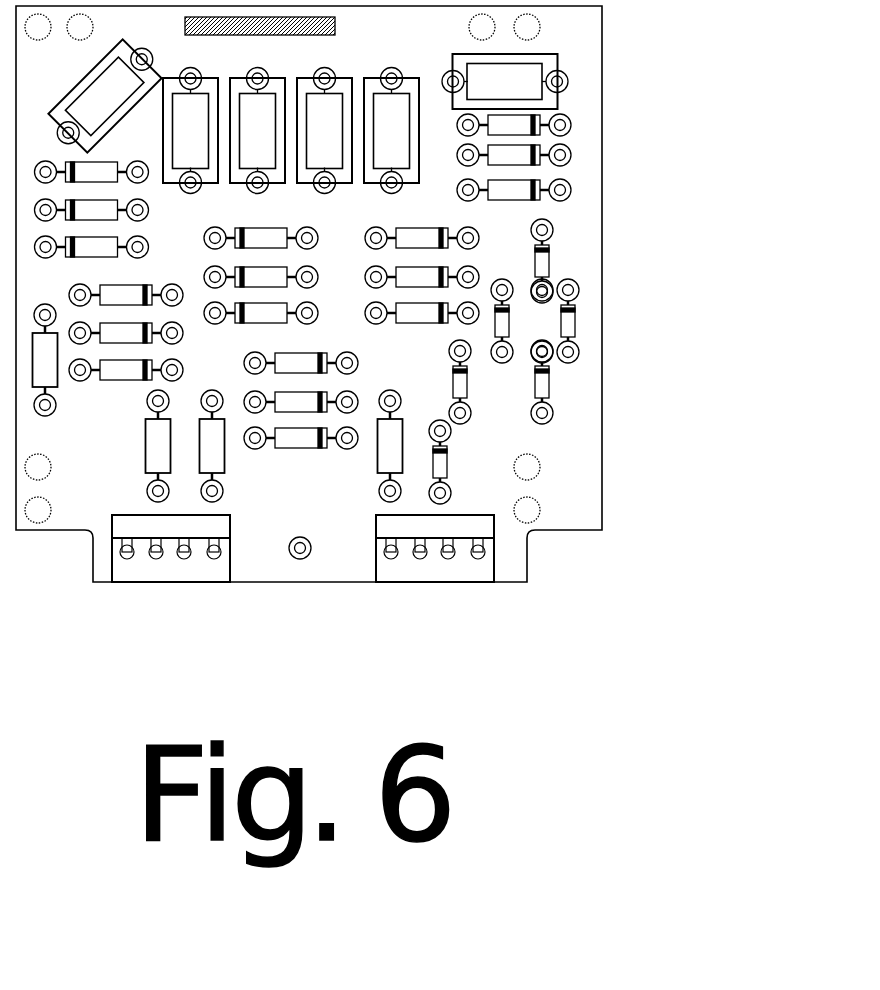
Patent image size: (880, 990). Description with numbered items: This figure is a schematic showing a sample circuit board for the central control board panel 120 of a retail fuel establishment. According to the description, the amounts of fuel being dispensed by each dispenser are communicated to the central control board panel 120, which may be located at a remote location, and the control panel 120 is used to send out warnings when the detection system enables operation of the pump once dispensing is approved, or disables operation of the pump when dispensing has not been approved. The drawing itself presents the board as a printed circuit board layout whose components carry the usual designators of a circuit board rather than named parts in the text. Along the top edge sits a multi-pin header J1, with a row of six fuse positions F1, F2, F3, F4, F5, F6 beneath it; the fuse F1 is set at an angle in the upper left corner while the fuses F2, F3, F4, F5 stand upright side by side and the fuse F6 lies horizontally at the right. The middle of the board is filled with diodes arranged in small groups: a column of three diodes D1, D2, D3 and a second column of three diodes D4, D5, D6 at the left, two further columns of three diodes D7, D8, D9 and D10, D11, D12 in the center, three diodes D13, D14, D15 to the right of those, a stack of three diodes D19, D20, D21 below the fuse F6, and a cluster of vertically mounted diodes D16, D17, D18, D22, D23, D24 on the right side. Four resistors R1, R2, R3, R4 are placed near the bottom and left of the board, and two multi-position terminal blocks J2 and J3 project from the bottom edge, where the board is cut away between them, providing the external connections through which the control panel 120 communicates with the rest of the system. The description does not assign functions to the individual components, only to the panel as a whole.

The central control board panel 120 is at (384, 294).
The header connector J1 is at (249, 26).
The fuse F1 is at (105, 96).
The fuse F2 is at (190, 125).
The fuse F3 is at (257, 125).
The fuse F4 is at (324, 125).
The fuse F5 is at (391, 125).
The fuse F6 is at (496, 81).
The diode D1 is at (92, 166).
The diode D2 is at (92, 204).
The diode D3 is at (92, 241).
The diode D4 is at (126, 289).
The diode D5 is at (126, 327).
The diode D6 is at (126, 376).
The diode D7 is at (261, 231).
The diode D8 is at (261, 271).
The diode D9 is at (261, 319).
The diode D10 is at (301, 357).
The diode D11 is at (301, 396).
The diode D12 is at (301, 432).
The diode D13 is at (422, 231).
The diode D14 is at (422, 271).
The diode D15 is at (422, 308).
The diode D16 is at (511, 321).
The diode D17 is at (468, 382).
The diode D18 is at (449, 462).
The diode D19 is at (499, 125).
The diode D20 is at (499, 155).
The diode D21 is at (499, 190).
The diode D22 is at (550, 261).
The diode D23 is at (568, 321).
The diode D24 is at (551, 382).
The resistor R1 is at (52, 360).
The resistor R2 is at (149, 446).
The resistor R3 is at (203, 446).
The resistor R4 is at (381, 446).
The terminal block connector J2 is at (177, 548).
The terminal block connector J3 is at (424, 548).